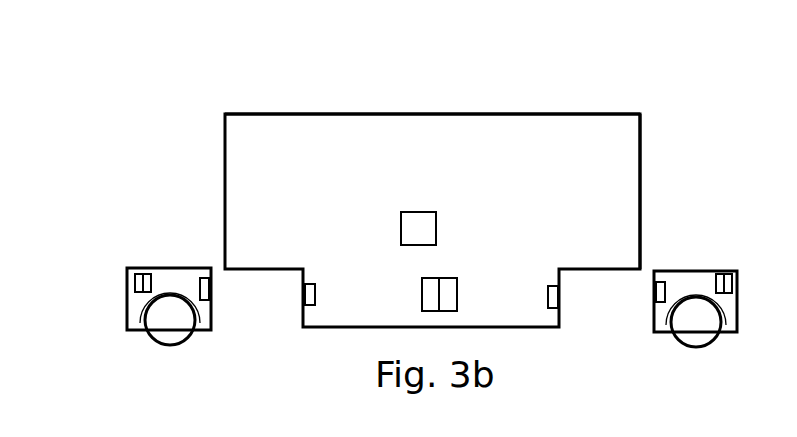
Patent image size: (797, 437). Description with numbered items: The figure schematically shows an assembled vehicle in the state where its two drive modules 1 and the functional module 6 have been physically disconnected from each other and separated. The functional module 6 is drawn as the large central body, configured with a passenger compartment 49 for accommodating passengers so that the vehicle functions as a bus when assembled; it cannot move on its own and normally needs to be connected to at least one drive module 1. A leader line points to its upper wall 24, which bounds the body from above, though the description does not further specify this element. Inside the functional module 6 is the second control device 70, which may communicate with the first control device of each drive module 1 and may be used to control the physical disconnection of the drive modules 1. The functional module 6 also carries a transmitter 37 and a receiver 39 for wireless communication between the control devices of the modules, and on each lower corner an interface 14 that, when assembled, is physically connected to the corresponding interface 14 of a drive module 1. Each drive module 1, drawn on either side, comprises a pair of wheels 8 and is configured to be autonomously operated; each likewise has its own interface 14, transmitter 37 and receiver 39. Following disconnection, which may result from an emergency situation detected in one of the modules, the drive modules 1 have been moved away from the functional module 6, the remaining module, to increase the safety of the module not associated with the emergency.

The drive module 1 is at (142, 256).
The functional module 6 is at (593, 106).
The wheels 8 is at (175, 347).
The interface 14 is at (303, 297).
The upper surface 24 is at (365, 143).
The transmitter 37 is at (421, 295).
The receiver 39 is at (458, 293).
The passenger compartment 49 is at (450, 150).
The second control device 70 is at (436, 226).